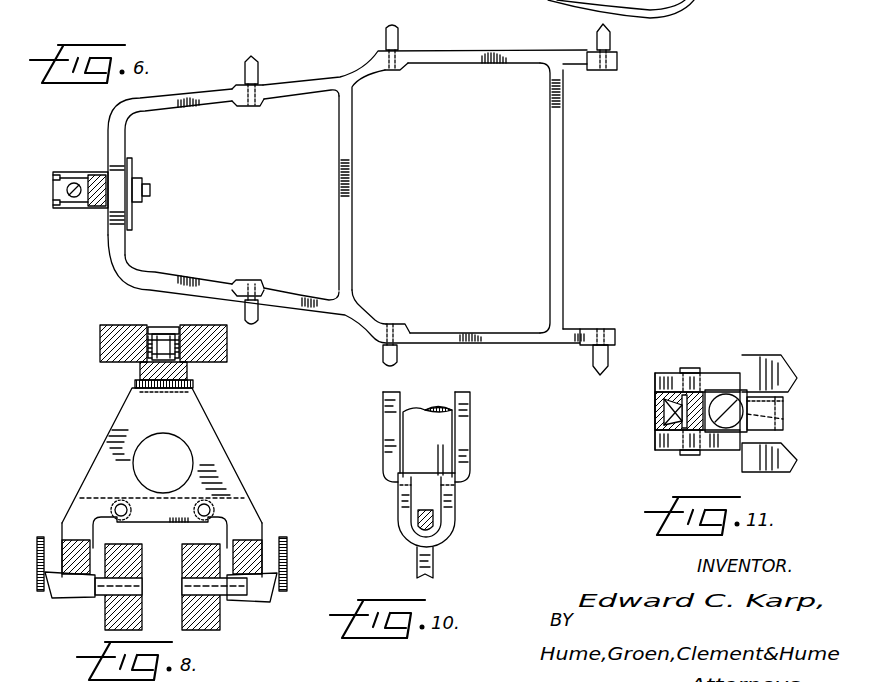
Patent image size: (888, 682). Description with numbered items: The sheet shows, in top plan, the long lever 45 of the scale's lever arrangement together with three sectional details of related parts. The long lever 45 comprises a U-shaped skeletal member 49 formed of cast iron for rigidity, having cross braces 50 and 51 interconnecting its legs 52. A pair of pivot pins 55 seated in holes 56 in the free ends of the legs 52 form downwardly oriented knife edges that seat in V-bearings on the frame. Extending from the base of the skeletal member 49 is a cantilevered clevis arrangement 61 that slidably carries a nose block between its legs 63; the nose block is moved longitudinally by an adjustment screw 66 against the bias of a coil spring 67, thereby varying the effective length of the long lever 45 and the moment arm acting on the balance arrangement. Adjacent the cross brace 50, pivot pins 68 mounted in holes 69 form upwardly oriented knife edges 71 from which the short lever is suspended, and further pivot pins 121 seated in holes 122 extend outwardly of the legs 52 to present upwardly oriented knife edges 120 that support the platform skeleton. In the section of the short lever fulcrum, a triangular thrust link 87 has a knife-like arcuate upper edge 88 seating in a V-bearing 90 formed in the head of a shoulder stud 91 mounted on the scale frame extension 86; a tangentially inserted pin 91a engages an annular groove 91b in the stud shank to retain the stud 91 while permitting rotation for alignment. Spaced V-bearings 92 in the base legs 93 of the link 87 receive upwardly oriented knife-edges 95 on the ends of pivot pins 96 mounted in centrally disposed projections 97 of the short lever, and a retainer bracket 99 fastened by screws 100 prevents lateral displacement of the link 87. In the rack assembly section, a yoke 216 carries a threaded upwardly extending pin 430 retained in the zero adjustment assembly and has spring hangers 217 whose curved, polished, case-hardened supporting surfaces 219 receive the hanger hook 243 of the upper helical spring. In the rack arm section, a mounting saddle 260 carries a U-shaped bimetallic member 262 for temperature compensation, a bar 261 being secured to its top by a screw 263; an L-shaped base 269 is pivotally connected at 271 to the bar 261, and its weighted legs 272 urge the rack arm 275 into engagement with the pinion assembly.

In FIG. 6, the long lever 45 is at (104, 273).
In FIG. 6, the U-shaped skeletal member 49 is at (160, 274).
In FIG. 6, the cross brace 50 is at (353, 200).
In FIG. 6, the cross brace 51 is at (565, 206).
In FIG. 6, the legs 52 is at (476, 66).
In FIG. 6, the pivot pins 55 is at (612, 38).
In FIG. 6, the holes 56 is at (604, 72).
In FIG. 6, the clevis arrangement 61 is at (46, 184).
In FIG. 6, the legs of clevis arrangement 63 is at (94, 172).
In FIG. 6, the adjustment screw 66 is at (56, 204).
In FIG. 6, the coil spring 67 is at (130, 180).
In FIG. 6, the pivot pins 68 is at (398, 38).
In FIG. 6, the holes 69 is at (390, 72).
In FIG. 6, the knife edges 71 is at (386, 34).
In FIG. 6, the knife edges 120 is at (258, 66).
In FIG. 6, the pivot pins 121 is at (246, 66).
In FIG. 6, the holes 122 is at (252, 105).
In FIG. 8, the scale frame extension 86 is at (100, 348).
In FIG. 8, the triangular thrust link 87 is at (210, 444).
In FIG. 8, the arcuate upper edge 88 is at (196, 386).
In FIG. 8, the V-bearing 90 is at (140, 372).
In FIG. 8, the shoulder stud 91 is at (164, 330).
In FIG. 8, the tangentially inserted pin 91a is at (150, 328).
In FIG. 8, the annular groove 91b is at (180, 336).
In FIG. 8, the V-bearings 92 is at (66, 598).
In FIG. 8, the base legs 93 is at (65, 520).
In FIG. 8, the knife-edges 95 is at (40, 556).
In FIG. 8, the pivot pins 96 is at (280, 592).
In FIG. 8, the projections 97 is at (182, 566).
In FIG. 8, the retainer bracket 99 is at (288, 530).
In FIG. 8, the screws 100 is at (118, 504).
In FIG. 10, the yoke 216 is at (466, 472).
In FIG. 10, the spring hangers 217 is at (456, 506).
In FIG. 10, the supporting surfaces 219 is at (432, 524).
In FIG. 10, the hanger hook 243 is at (434, 566).
In FIG. 10, the threaded pin 430 is at (440, 446).
In FIG. 11, the mounting saddle 260 is at (673, 371).
In FIG. 11, the bar 261 is at (770, 420).
In FIG. 11, the U-shaped bimetallic member 262 is at (784, 406).
In FIG. 11, the screw 263 is at (718, 396).
In FIG. 11, the L-shaped base 269 is at (660, 450).
In FIG. 11, the pivotal connection 271 is at (688, 456).
In FIG. 11, the weighted legs 272 is at (770, 357).
In FIG. 11, the rack arm 275 is at (664, 414).